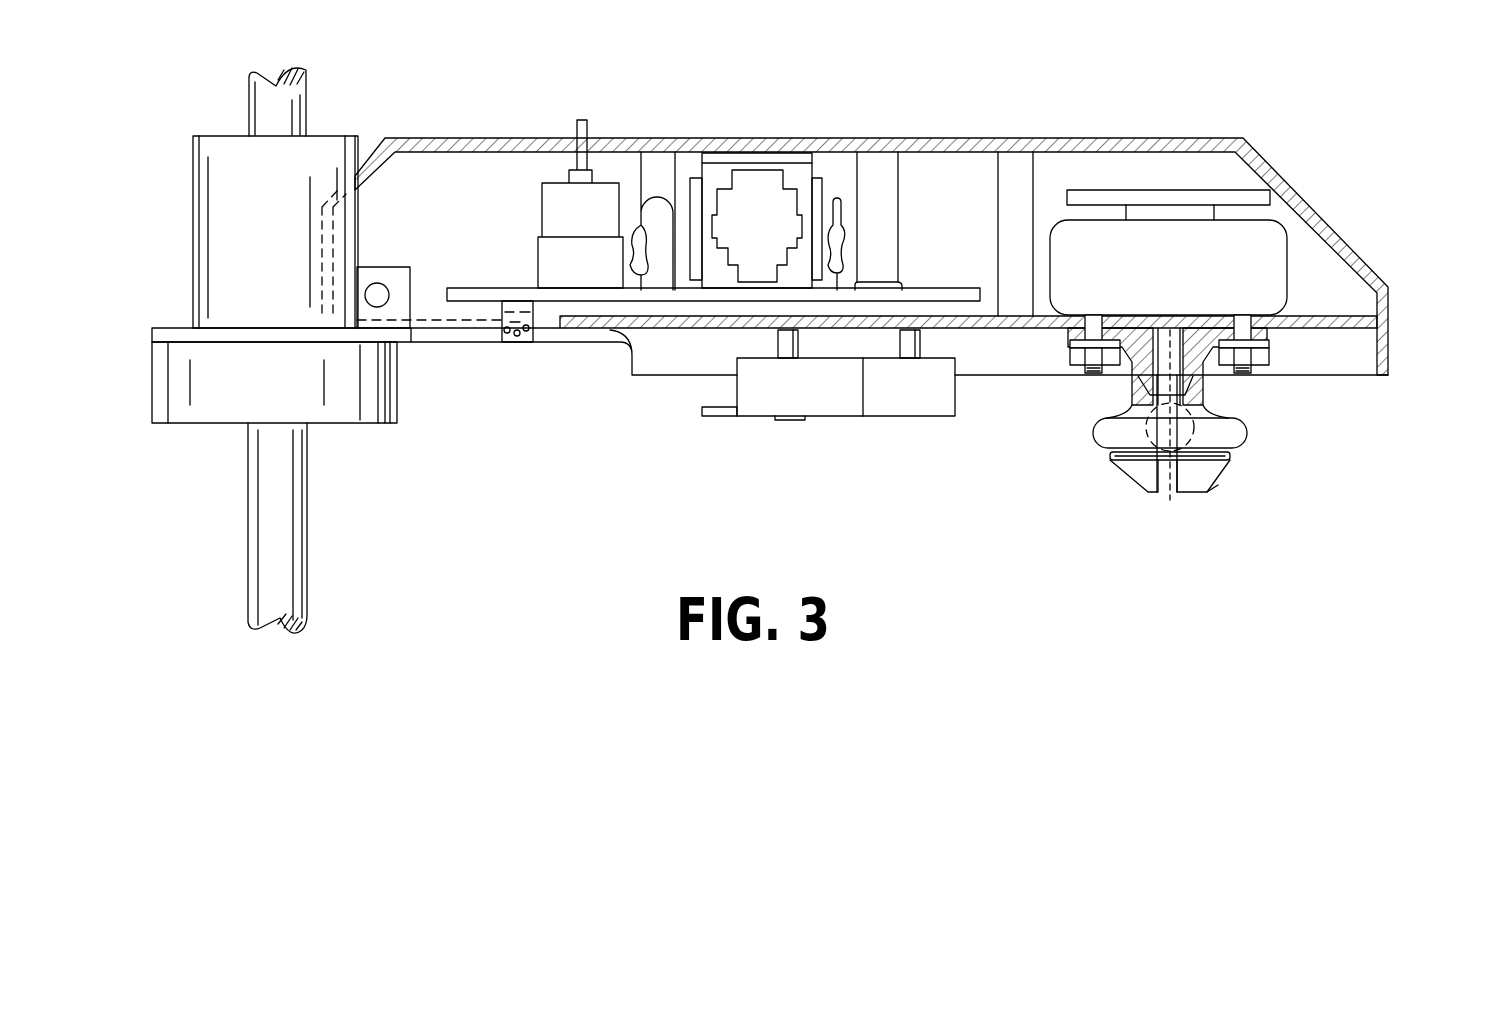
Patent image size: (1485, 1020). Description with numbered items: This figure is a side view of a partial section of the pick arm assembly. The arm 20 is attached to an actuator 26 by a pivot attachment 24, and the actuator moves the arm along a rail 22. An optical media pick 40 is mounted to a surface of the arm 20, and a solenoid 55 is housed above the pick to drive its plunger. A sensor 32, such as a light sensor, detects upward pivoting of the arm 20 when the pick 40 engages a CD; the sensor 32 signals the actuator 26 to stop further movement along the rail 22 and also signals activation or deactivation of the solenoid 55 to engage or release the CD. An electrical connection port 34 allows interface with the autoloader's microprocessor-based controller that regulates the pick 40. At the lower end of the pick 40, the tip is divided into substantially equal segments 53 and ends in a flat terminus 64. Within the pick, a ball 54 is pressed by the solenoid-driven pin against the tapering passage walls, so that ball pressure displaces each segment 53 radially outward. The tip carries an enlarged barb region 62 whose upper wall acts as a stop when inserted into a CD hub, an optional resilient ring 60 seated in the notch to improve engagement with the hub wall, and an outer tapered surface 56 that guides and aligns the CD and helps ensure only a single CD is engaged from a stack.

The arm 20 is at (1372, 267).
The rail 22 is at (297, 490).
The pivot attachment 24 is at (365, 297).
The actuator 26 is at (193, 173).
The sensor 32 is at (507, 342).
The electrical connection port 34 is at (787, 187).
The optical media pick 40 is at (1202, 436).
The segments 53 is at (1140, 470).
The ball 54 is at (1230, 451).
The solenoid 55 is at (1272, 235).
The outer tapered surface 56 is at (1202, 490).
The ring 60 is at (1110, 455).
The barb region 62 is at (1093, 430).
The flat terminus 64 is at (1153, 490).